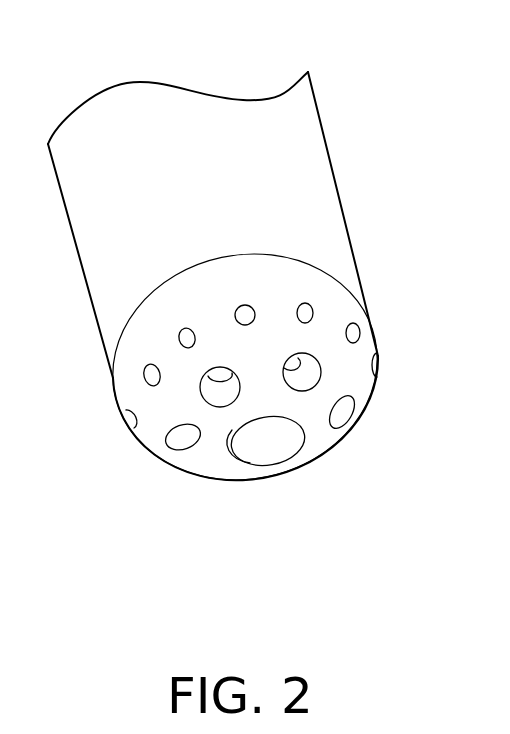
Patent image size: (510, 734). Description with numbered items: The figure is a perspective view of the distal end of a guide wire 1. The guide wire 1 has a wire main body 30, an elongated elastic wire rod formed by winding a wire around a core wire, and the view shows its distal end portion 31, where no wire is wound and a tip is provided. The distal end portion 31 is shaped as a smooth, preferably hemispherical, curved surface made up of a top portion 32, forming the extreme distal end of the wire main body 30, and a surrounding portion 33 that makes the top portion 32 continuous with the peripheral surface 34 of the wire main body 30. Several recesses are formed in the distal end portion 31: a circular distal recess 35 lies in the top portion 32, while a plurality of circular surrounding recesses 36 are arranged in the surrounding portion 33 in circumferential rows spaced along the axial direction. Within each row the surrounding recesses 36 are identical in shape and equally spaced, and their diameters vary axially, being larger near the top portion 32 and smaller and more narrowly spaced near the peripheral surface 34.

The guide wire 1 is at (332, 160).
The wire main body 30 is at (320, 115).
The distal end portion 31 is at (320, 453).
The top portion 32 is at (270, 450).
The surrounding portion 33 is at (333, 295).
The peripheral surface 34 is at (227, 123).
The distal recess 35 is at (237, 452).
The surrounding recesses 36 is at (360, 328).